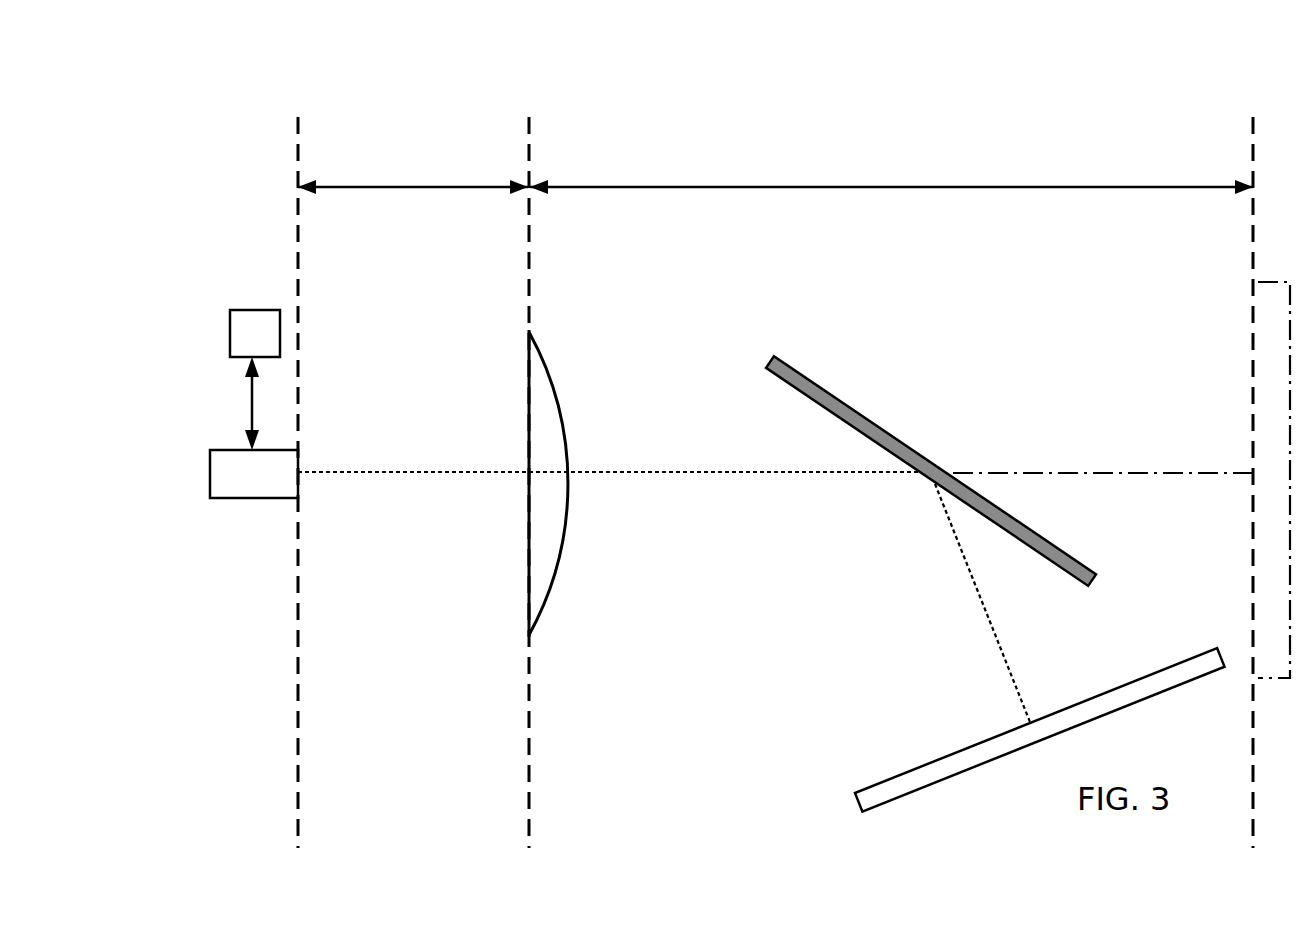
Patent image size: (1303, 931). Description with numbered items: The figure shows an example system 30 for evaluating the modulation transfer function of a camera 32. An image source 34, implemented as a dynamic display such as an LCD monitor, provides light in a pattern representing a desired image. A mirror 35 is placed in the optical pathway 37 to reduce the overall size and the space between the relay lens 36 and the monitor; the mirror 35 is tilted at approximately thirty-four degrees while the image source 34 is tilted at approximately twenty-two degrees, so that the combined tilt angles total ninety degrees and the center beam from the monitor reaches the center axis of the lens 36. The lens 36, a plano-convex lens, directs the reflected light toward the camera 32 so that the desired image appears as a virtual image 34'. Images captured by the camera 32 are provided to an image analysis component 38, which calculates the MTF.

The system 30 is at (320, 72).
The camera 32 is at (238, 450).
The image source 34 is at (1040, 729).
The virtual image 34' is at (1241, 480).
The mirror 35 is at (835, 393).
The lens 36 is at (562, 397).
The optical pathway 37 is at (947, 584).
The image analysis component 38 is at (250, 310).